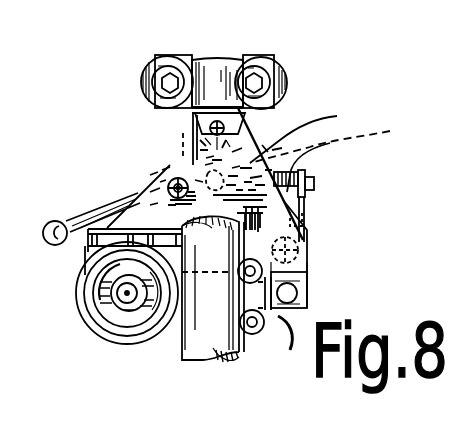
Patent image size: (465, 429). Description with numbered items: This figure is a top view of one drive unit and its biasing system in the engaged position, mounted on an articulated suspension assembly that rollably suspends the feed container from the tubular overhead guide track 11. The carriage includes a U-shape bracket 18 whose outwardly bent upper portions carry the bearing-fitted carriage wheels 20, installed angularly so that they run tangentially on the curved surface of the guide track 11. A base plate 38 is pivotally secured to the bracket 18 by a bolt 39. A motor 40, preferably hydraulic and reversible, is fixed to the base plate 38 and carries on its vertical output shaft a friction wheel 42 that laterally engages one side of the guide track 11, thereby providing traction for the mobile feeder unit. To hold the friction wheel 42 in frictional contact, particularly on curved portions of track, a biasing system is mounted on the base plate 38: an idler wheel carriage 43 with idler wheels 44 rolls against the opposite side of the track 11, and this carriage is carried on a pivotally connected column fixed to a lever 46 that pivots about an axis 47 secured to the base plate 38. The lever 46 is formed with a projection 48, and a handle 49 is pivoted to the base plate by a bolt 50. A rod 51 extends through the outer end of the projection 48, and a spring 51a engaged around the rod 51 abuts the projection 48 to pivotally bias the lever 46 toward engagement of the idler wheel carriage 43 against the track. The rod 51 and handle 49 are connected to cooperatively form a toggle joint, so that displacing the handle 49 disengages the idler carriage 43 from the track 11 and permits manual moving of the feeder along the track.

The overhead guide track 11 is at (196, 335).
The U-shape bracket 18 is at (217, 75).
The carriage wheels 20 is at (145, 76).
The base plate 38 is at (307, 147).
The bolt 39 is at (262, 155).
The motor 40 is at (167, 338).
The friction wheel 42 is at (82, 292).
The idler wheel carriage 43 is at (290, 332).
The idler wheels 44 is at (222, 325).
The lever 46 is at (307, 287).
The axis 47 is at (313, 259).
The projection 48 is at (307, 197).
The handle 49 is at (75, 222).
The bolt 50 is at (168, 183).
The rod 51 is at (336, 133).
The spring 51a is at (304, 198).